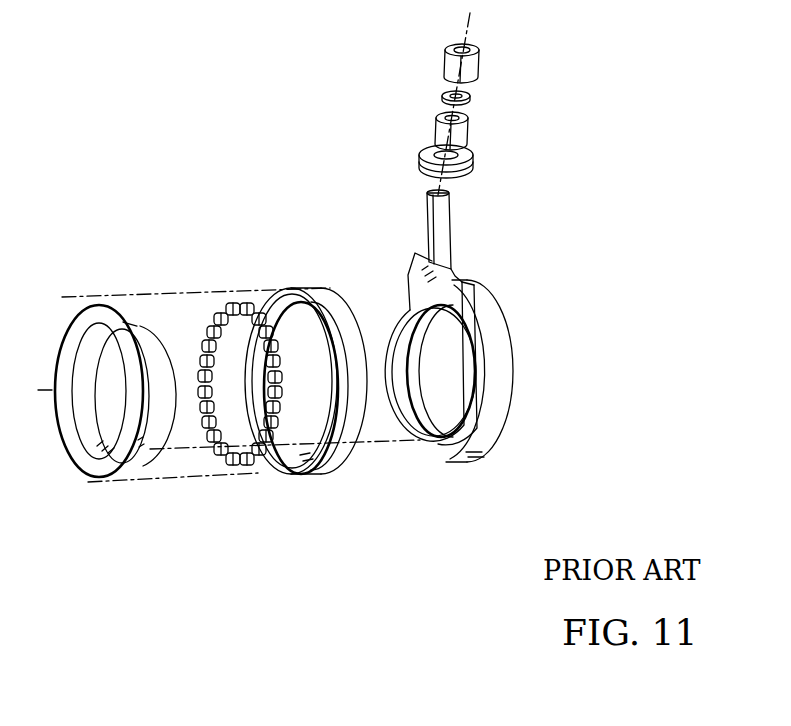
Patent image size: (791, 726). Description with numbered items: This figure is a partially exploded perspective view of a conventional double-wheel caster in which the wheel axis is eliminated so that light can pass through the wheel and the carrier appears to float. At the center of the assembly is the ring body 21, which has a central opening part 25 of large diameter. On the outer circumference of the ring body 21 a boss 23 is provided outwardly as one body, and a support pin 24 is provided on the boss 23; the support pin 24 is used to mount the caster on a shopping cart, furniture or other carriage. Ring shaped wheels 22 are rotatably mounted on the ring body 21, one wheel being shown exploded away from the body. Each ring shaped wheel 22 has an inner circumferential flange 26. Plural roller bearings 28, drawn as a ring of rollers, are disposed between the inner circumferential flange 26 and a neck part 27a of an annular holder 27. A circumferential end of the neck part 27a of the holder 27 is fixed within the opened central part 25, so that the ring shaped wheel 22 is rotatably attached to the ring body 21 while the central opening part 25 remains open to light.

The ring body 21 is at (400, 376).
The ring shaped wheel 22 is at (421, 376).
The boss 23 is at (412, 258).
The support pin 24 is at (449, 210).
The central opening part 25 is at (412, 373).
The inner circumferential flange 26 is at (280, 453).
The annular holder 27 is at (115, 375).
The neck part 27a is at (149, 425).
The roller bearings 28 is at (238, 292).